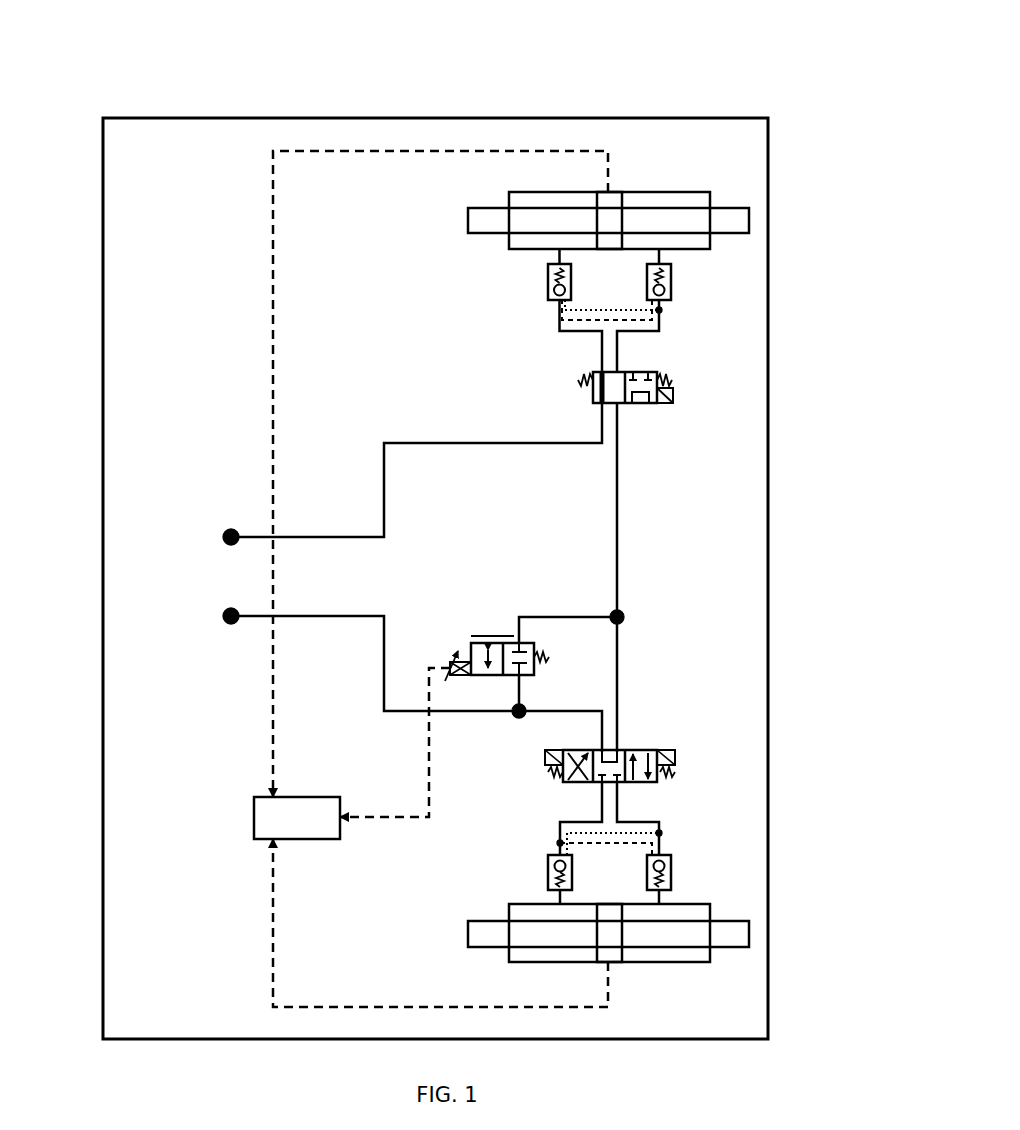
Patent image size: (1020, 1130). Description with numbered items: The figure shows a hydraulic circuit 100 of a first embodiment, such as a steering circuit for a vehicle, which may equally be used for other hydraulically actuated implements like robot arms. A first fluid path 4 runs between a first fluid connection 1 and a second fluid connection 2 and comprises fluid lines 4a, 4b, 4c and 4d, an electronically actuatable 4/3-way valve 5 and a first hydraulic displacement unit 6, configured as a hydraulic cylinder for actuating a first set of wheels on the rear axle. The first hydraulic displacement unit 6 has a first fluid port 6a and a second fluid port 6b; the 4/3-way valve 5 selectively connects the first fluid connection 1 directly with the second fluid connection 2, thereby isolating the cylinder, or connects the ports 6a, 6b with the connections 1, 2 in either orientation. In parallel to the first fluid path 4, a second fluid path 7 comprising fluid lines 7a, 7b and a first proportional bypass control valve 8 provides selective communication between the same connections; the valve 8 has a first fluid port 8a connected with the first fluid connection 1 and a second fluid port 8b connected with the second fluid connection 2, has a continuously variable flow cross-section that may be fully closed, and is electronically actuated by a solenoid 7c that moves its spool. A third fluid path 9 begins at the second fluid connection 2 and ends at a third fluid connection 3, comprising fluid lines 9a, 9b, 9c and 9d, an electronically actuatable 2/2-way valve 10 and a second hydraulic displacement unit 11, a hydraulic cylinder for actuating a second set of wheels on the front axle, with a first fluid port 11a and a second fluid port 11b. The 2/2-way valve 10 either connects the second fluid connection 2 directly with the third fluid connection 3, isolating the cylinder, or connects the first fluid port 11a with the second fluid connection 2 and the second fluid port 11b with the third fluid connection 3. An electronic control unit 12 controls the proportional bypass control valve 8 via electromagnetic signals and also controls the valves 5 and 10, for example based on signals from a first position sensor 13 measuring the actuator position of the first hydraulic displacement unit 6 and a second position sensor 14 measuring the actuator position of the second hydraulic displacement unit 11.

The hydraulic circuit 100 is at (703, 67).
The first fluid connection 1 is at (231, 616).
The second fluid connection 2 is at (627, 620).
The third fluid connection 3 is at (231, 537).
The first fluid path 4 is at (498, 813).
The fluid line 4a is at (583, 711).
The fluid line 4b is at (618, 704).
The fluid line 4c is at (600, 816).
The fluid line 4d is at (619, 816).
The 4/3-way valve 5 is at (689, 755).
The first hydraulic displacement unit 6 is at (633, 967).
The first fluid port 6a is at (553, 898).
The second fluid port 6b is at (667, 898).
The second fluid path 7 is at (527, 561).
The fluid line 7a is at (517, 683).
The fluid line 7b is at (555, 617).
The solenoid 7c is at (455, 663).
The first proportional bypass control valve 8 is at (466, 603).
The first fluid port 8a is at (525, 678).
The second fluid port 8b is at (505, 641).
The third fluid path 9 is at (492, 285).
The fluid line 9a is at (617, 535).
The fluid line 9b is at (488, 443).
The fluid line 9c is at (620, 366).
The fluid line 9d is at (598, 366).
The 2/2-way valve 10 is at (633, 420).
The second hydraulic displacement unit 11 is at (642, 185).
The first fluid port 11a is at (669, 252).
The second fluid port 11b is at (550, 252).
The electronic control unit 12 is at (318, 840).
The first position sensor 13 is at (605, 977).
The second position sensor 14 is at (602, 190).